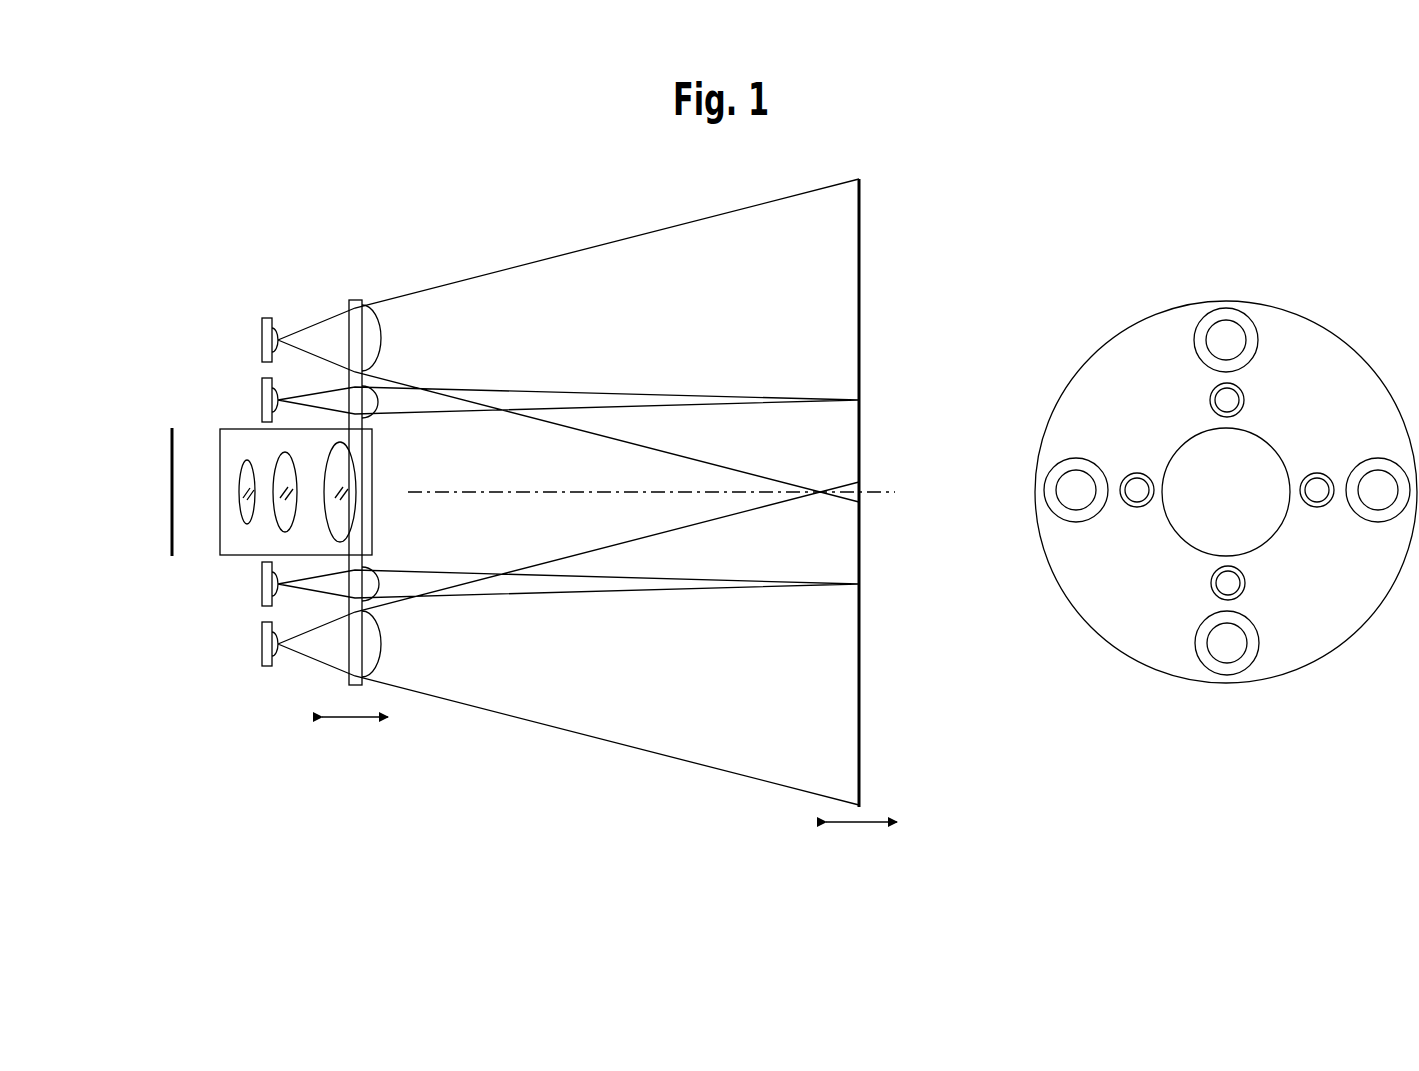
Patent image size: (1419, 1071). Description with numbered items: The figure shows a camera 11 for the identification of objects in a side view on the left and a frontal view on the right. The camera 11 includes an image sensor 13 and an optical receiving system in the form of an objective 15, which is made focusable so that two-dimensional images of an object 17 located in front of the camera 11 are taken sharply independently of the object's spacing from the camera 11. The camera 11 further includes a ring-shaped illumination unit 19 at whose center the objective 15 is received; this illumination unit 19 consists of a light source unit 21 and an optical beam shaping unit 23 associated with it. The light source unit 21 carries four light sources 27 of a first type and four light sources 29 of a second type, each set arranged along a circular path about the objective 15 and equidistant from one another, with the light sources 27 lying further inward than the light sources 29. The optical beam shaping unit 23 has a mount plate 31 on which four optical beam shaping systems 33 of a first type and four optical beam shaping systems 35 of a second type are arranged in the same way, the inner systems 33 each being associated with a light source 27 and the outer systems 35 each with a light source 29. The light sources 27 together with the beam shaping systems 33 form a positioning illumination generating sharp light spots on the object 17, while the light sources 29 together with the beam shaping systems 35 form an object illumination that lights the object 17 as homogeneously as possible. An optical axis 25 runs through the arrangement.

The camera 11 is at (268, 236).
The image sensor 13 is at (170, 465).
The objective 15 is at (232, 558).
The object 17 is at (861, 243).
The illumination unit 19 is at (257, 311).
The light source unit 21 is at (262, 319).
The optical beam shaping unit 23 is at (846, 495).
The optical axis 25 is at (532, 492).
The light source of the first type 27 is at (265, 398).
The light source of the second type 29 is at (265, 342).
The mount plate 31 is at (344, 648).
The optical beam shaping system of the first type 33 is at (378, 403).
The optical beam shaping system of the second type 35 is at (376, 347).